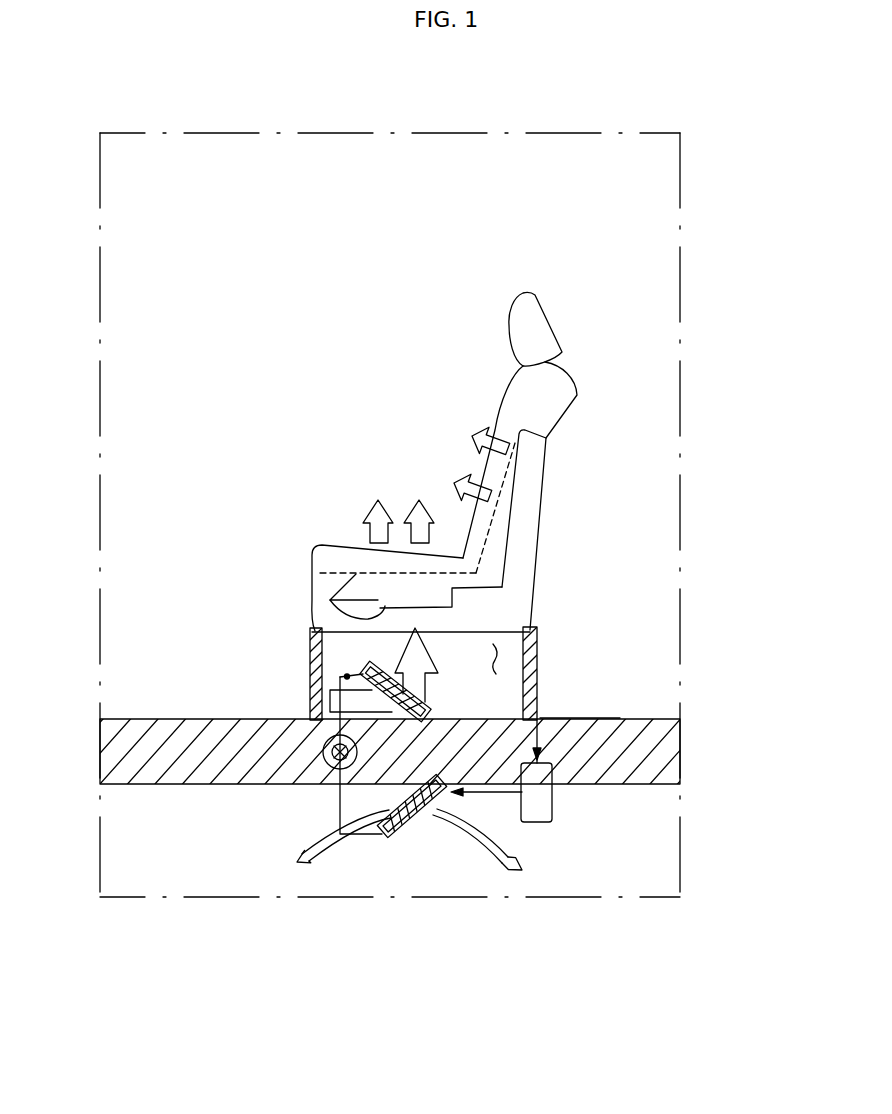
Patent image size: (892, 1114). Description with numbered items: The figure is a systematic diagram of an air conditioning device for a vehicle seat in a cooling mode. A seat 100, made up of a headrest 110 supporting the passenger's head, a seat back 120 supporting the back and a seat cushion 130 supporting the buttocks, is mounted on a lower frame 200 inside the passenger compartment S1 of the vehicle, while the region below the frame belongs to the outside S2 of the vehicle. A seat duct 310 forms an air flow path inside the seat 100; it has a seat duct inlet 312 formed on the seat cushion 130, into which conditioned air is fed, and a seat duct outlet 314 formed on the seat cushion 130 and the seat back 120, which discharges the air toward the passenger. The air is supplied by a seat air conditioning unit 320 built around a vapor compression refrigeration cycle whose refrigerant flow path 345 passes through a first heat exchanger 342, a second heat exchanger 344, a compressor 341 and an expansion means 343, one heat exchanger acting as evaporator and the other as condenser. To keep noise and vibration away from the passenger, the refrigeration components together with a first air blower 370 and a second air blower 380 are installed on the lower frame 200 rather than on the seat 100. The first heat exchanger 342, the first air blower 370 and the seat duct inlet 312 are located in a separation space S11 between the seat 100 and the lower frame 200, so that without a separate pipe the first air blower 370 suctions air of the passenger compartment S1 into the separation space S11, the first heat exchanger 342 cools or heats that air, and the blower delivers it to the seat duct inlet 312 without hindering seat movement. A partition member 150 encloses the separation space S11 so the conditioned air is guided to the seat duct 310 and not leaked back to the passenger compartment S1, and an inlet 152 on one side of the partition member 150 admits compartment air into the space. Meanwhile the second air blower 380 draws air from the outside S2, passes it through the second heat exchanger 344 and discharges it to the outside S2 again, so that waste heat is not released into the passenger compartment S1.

The passenger compartment S1 is at (224, 173).
The outside of the vehicle S2 is at (143, 856).
The separation space S11 is at (497, 657).
The seat 100 is at (603, 406).
The headrest 110 is at (552, 331).
The seat back 120 is at (557, 404).
The seat cushion 130 is at (312, 573).
The partition member 150 is at (309, 650).
The inlet 152 is at (328, 697).
The lower frame 200 is at (206, 768).
The seat duct 310 is at (546, 460).
The seat duct inlet 312 is at (322, 611).
The seat duct outlet 314 is at (368, 573).
The seat air conditioning unit 320 is at (609, 834).
The compressor 341 is at (534, 823).
The first heat exchanger 342 is at (618, 718).
The expansion means 343 is at (335, 767).
The second heat exchanger 344 is at (417, 828).
The refrigerant flow path 345 is at (362, 838).
The first air blower 370 is at (435, 700).
The second air blower 380 is at (383, 838).